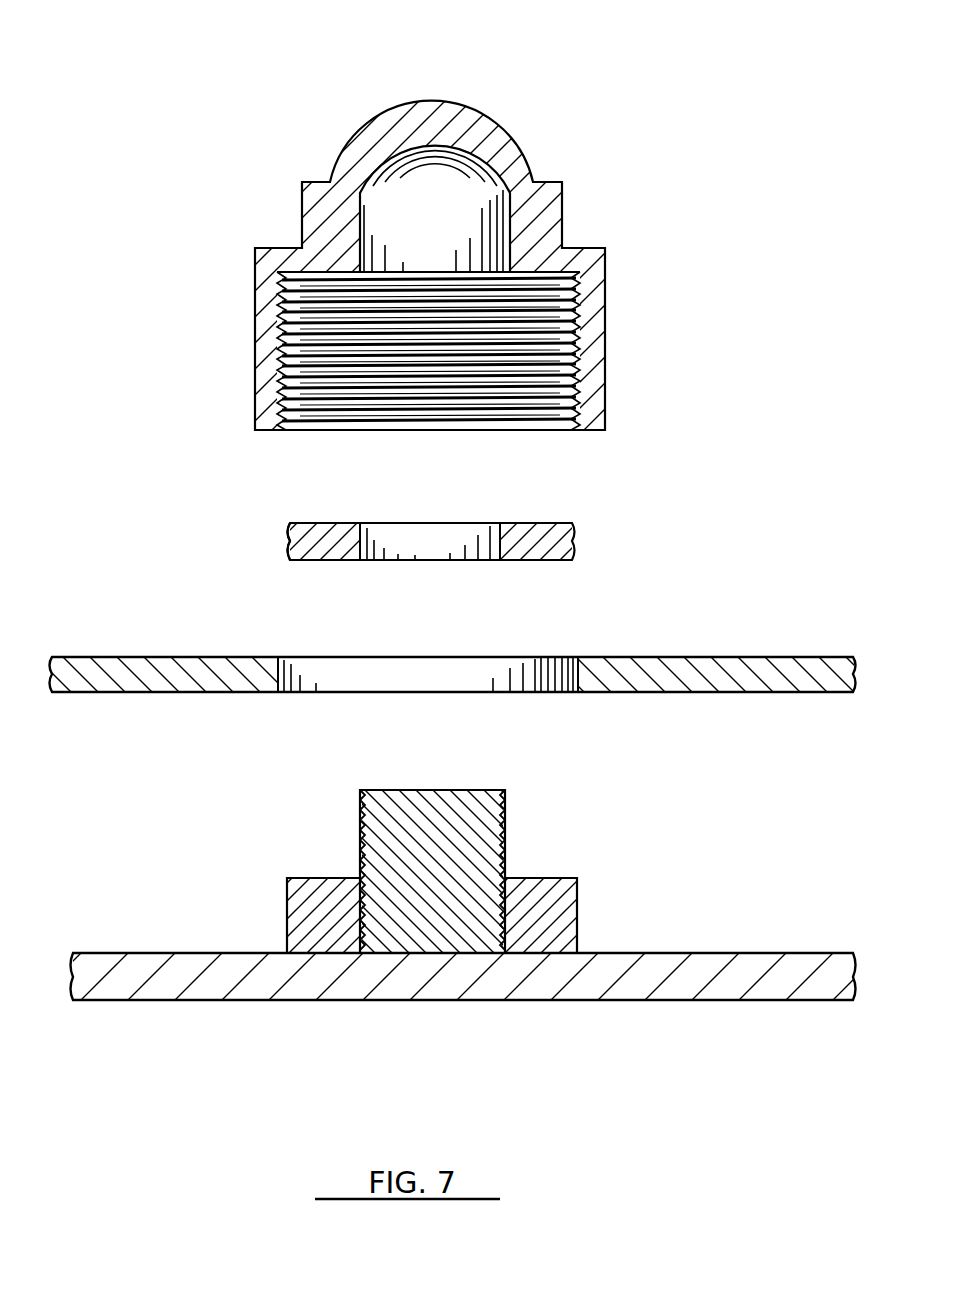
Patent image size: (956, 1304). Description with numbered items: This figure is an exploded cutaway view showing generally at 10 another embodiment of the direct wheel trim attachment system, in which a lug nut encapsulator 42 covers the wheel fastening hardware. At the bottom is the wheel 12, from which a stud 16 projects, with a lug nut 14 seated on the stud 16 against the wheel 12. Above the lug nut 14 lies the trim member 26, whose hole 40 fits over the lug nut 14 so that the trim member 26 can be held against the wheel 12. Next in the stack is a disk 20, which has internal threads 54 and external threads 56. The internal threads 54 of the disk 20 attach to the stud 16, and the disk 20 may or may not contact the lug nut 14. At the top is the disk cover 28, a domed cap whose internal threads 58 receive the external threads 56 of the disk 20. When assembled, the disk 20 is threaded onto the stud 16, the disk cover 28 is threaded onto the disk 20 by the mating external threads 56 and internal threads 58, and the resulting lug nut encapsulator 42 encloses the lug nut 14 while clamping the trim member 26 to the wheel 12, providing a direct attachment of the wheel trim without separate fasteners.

The direct wheel trim attachment system 10 is at (215, 125).
The wheel 12 is at (733, 953).
The lug nut 14 is at (577, 902).
The stud 16 is at (507, 805).
The disk 20 is at (410, 529).
The trim member 26 is at (453, 646).
The disk cover 28 is at (448, 307).
The hole 40 is at (560, 668).
The lug nut encapsulator 42 is at (562, 200).
The internal threads 54 is at (493, 537).
The external threads 56 is at (283, 540).
The internal threads 58 is at (297, 420).